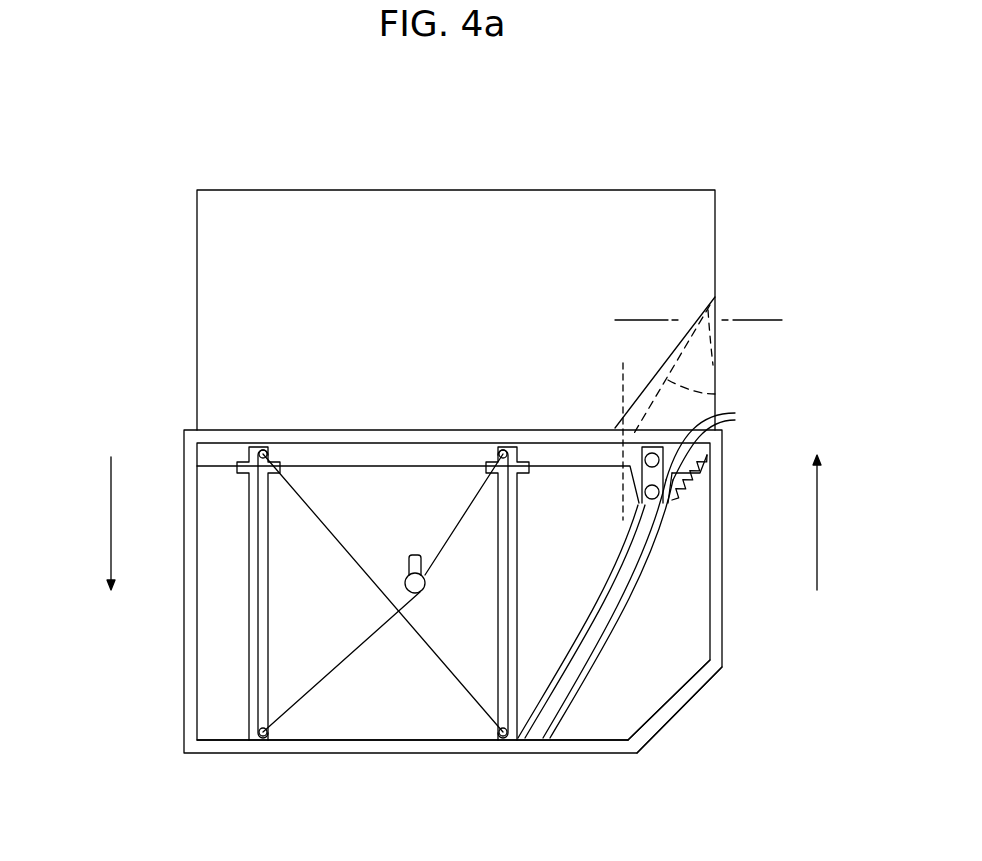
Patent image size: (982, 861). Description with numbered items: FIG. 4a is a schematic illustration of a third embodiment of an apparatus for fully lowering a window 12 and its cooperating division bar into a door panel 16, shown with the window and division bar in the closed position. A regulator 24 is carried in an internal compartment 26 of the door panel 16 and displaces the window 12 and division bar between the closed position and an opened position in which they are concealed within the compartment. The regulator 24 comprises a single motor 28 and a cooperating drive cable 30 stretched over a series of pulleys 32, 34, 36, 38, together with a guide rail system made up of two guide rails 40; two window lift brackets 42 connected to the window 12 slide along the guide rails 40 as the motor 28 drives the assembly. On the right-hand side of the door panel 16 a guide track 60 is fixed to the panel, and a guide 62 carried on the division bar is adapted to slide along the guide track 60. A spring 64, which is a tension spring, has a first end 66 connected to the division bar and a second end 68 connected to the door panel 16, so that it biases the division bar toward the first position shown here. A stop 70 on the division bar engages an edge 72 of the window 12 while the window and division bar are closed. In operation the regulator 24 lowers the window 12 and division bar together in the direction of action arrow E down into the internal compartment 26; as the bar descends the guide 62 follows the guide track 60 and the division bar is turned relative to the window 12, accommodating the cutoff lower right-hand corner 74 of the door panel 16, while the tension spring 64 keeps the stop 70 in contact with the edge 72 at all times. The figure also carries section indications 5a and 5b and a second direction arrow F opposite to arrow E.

The window 12 is at (227, 321).
The door panel 16 is at (183, 640).
The regulator 24 is at (230, 695).
The internal compartment 26 is at (329, 722).
The motor 28 is at (403, 578).
The drive cable 30 is at (422, 648).
The pulley 32 is at (263, 450).
The pulley 34 is at (502, 450).
The pulley 36 is at (262, 741).
The pulley 38 is at (505, 741).
The guide rail 40 is at (270, 592).
The window lift bracket 42 is at (245, 462).
The guide track 60 is at (603, 655).
The guide 62 is at (704, 453).
The spring 64 is at (703, 478).
The first end 66 is at (668, 498).
The second end 68 is at (713, 457).
The stop 70 is at (715, 340).
The edge 72 is at (715, 394).
The cutoff lower right-hand corner 74 is at (697, 693).
The section line 5a is at (624, 311).
The section line 5b is at (632, 372).
The action arrow E is at (110, 518).
The direction F is at (818, 518).